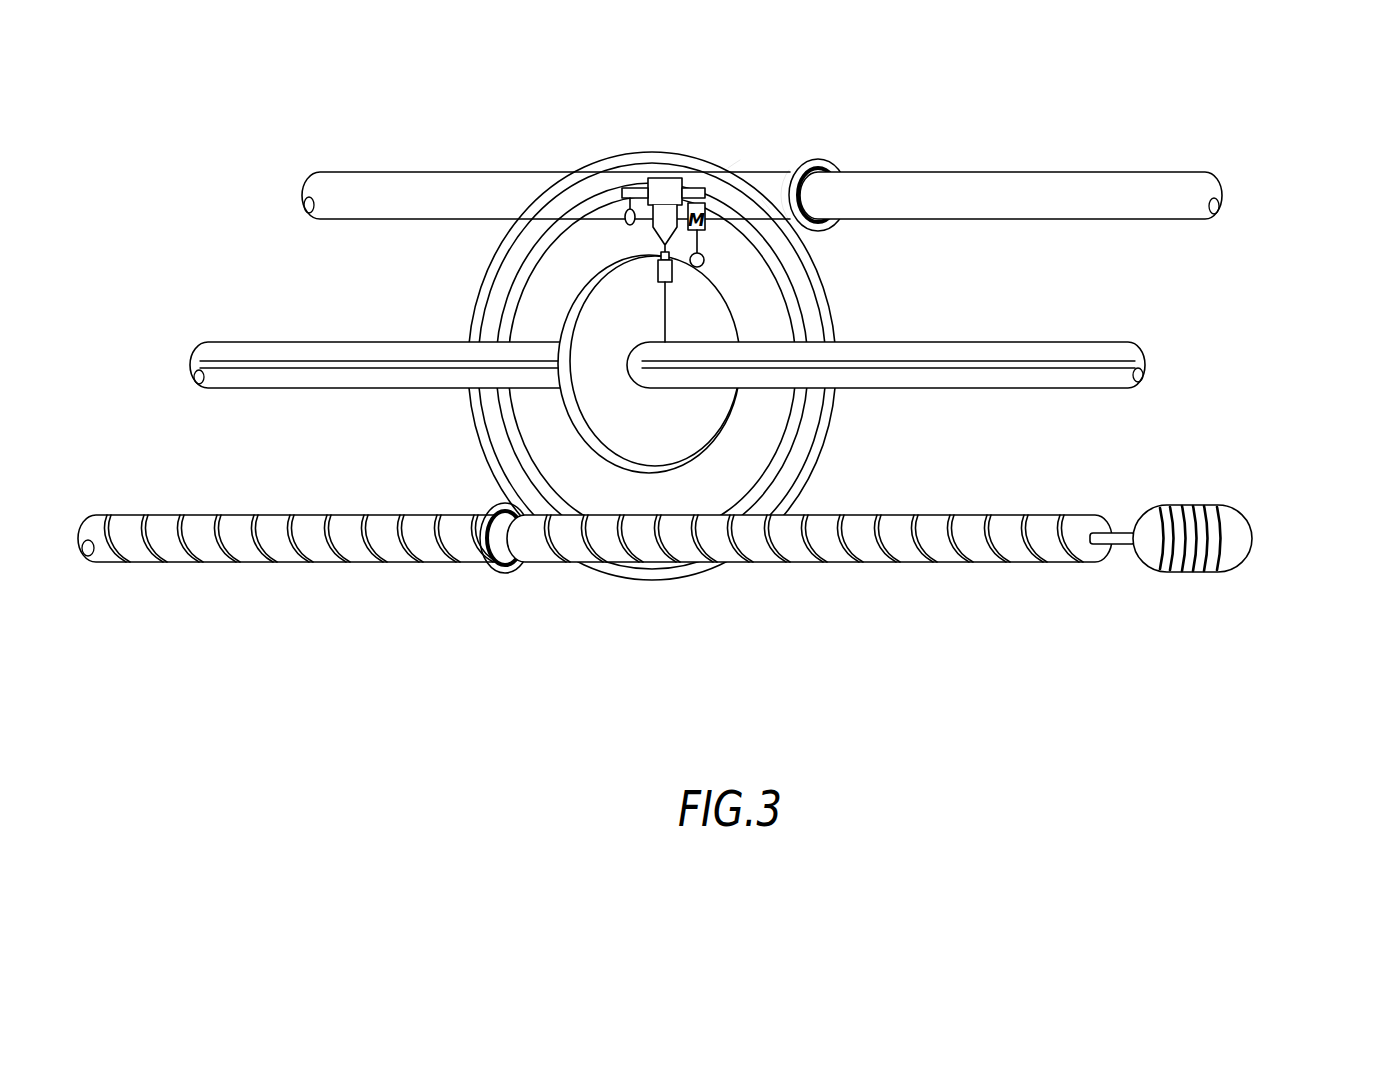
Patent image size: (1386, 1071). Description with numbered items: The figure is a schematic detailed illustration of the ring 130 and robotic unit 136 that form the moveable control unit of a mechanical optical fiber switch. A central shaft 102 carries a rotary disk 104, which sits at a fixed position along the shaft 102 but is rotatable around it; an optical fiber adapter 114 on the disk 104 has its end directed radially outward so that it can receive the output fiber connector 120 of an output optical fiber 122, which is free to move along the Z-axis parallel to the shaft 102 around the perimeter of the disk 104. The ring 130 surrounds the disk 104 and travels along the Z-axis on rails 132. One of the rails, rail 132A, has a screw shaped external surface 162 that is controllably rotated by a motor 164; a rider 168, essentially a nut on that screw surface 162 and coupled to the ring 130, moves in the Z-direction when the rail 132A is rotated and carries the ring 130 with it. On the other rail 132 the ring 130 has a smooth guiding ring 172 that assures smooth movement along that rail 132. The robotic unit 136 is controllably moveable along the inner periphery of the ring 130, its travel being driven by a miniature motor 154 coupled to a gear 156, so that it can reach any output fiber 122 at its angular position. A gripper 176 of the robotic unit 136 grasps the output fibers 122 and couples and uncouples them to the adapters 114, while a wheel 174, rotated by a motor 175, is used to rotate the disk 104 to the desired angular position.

The central shaft 102 is at (667, 364).
The rotary disk 104 is at (705, 307).
The optical fiber adapter 114 is at (657, 262).
The output fiber connector 120 is at (660, 243).
The output optical fiber 122 is at (624, 216).
The ring 130 is at (472, 320).
The rail 132 is at (762, 175).
The rail 132A is at (1127, 544).
The robotic unit 136 is at (666, 178).
The miniature motor 154 is at (614, 202).
The gear 156 is at (625, 178).
The screw shaped external surface 162 is at (595, 589).
The motor 164 is at (1236, 536).
The rider 168 is at (513, 572).
The smooth guiding ring 172 is at (818, 162).
The wheel 174 is at (793, 178).
The motor 175 is at (730, 174).
The gripper 176 is at (766, 205).